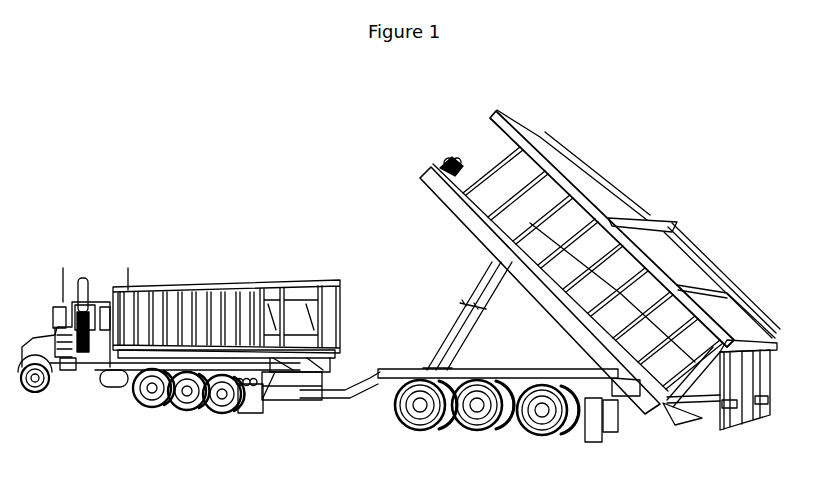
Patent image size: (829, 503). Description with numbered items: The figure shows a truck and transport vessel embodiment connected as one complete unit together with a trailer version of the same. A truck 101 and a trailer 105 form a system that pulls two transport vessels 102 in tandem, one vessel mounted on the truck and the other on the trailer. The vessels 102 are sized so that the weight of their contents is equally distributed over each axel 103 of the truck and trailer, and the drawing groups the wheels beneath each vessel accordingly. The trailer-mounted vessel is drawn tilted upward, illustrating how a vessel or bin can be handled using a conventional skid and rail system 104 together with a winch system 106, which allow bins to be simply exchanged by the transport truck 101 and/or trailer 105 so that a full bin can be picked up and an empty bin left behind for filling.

The truck 101 is at (100, 282).
The transport vessels 102 is at (230, 267).
The axel 103 is at (136, 417).
The skid and rail system 104 is at (274, 408).
The trailer 105 is at (412, 330).
The winch system 106 is at (450, 156).